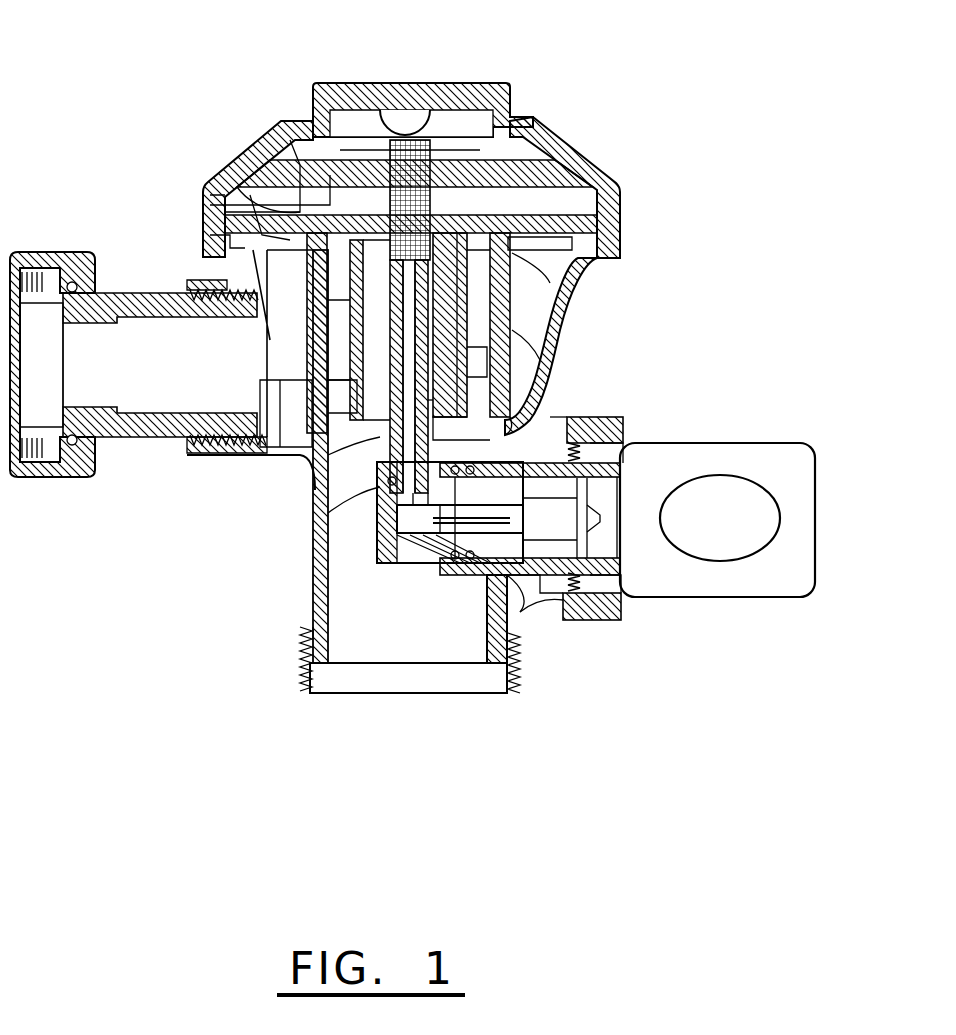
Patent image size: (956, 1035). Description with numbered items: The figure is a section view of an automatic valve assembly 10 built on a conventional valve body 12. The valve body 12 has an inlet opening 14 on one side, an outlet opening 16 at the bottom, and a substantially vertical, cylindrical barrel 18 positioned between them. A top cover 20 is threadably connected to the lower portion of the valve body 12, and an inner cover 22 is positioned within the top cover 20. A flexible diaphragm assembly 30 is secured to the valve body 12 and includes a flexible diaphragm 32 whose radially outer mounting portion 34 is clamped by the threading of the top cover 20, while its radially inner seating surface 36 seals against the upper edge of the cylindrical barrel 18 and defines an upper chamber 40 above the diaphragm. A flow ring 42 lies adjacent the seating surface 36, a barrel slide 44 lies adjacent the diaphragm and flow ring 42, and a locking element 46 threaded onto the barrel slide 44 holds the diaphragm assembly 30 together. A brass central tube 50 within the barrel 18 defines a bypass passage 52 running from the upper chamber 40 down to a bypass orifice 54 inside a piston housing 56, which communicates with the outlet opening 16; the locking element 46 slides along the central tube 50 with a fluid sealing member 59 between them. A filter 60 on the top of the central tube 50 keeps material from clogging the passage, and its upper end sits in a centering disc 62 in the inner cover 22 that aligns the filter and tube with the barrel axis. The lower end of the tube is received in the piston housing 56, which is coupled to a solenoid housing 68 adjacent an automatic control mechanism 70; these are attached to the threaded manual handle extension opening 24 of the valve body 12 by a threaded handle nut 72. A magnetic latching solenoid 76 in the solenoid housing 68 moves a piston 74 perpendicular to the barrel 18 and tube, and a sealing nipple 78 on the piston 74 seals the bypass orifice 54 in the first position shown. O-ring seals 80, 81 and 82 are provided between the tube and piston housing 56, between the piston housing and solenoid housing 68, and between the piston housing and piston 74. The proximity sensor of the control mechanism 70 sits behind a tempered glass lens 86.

The valve assembly 10 is at (232, 780).
The valve body 12 is at (218, 268).
The inlet opening 14 is at (219, 364).
The outlet opening 16 is at (452, 631).
The cylindrical barrel 18 is at (520, 340).
The top cover 20 is at (588, 170).
The inner cover 22 is at (535, 114).
The manual handle extension opening 24 is at (515, 612).
The flexible diaphragm assembly 30 is at (262, 200).
The flexible diaphragm 32 is at (566, 287).
The radially outer mounting portion 34 is at (598, 210).
The radially inner seating surface 36 is at (300, 165).
The upper chamber 40 is at (620, 178).
The flow ring 42 is at (560, 312).
The barrel slide 44 is at (555, 368).
The locking element 46 is at (228, 215).
The central tube 50 is at (312, 465).
The bypass passage 52 is at (455, 405).
The bypass orifice 54 is at (400, 518).
The piston housing 56 is at (305, 640).
The fluid sealing member 59 is at (326, 330).
The filter 60 is at (412, 140).
The centering disc 62 is at (480, 160).
The solenoid housing 68 is at (600, 447).
The automatic control mechanism 70 is at (810, 445).
The threaded handle nut 72 is at (620, 612).
The piston 74 is at (378, 640).
The magnetic latching solenoid 76 is at (570, 524).
The sealing nipple 78 is at (400, 545).
The seal 80 is at (392, 485).
The seal 81 is at (465, 600).
The seal 82 is at (415, 600).
The tempered glass lens 86 is at (743, 537).